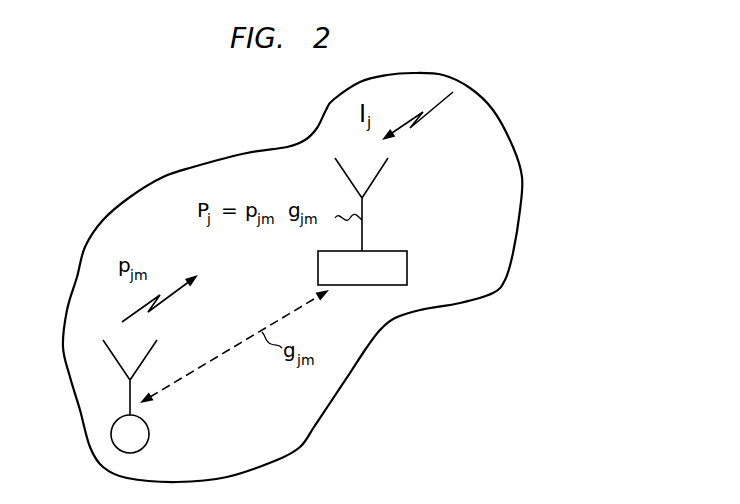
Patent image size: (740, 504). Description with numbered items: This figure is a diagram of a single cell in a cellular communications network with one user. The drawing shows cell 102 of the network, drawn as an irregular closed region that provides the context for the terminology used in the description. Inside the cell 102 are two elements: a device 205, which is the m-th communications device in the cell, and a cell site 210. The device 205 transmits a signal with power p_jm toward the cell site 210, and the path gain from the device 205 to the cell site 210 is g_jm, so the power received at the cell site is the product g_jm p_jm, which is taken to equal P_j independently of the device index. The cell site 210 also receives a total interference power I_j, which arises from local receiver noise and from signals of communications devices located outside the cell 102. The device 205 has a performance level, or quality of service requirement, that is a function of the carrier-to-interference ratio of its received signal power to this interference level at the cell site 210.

The cell 102 is at (375, 335).
The device 205 is at (149, 433).
The cell site 210 is at (388, 251).